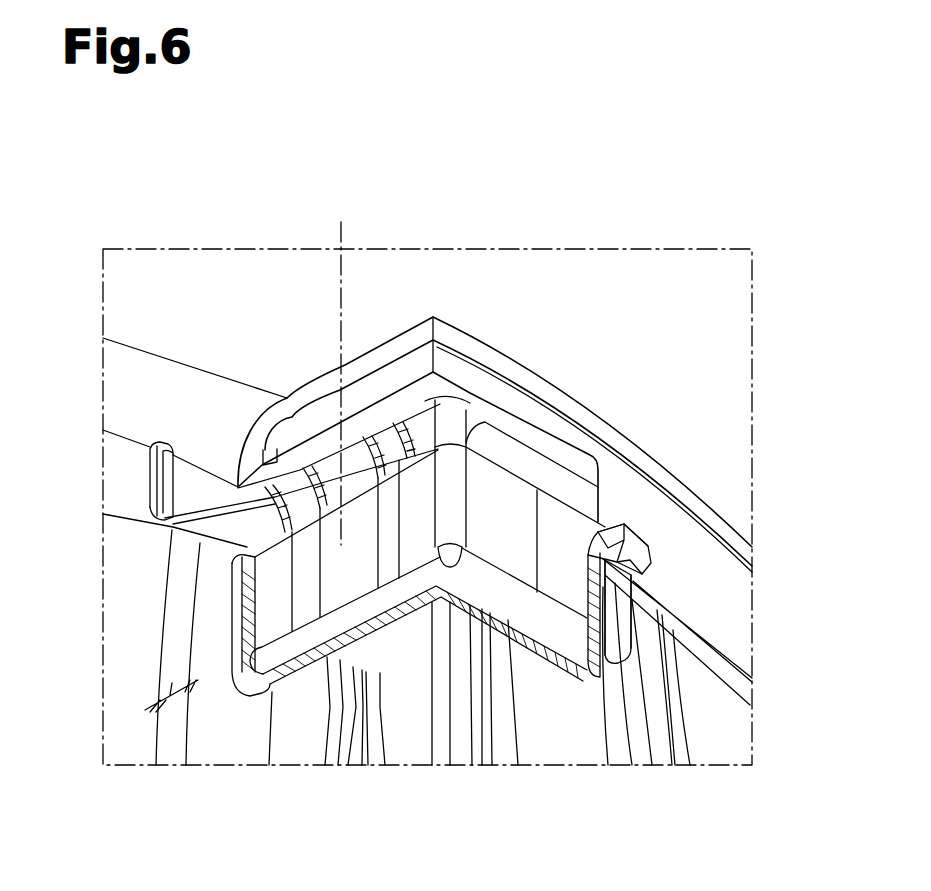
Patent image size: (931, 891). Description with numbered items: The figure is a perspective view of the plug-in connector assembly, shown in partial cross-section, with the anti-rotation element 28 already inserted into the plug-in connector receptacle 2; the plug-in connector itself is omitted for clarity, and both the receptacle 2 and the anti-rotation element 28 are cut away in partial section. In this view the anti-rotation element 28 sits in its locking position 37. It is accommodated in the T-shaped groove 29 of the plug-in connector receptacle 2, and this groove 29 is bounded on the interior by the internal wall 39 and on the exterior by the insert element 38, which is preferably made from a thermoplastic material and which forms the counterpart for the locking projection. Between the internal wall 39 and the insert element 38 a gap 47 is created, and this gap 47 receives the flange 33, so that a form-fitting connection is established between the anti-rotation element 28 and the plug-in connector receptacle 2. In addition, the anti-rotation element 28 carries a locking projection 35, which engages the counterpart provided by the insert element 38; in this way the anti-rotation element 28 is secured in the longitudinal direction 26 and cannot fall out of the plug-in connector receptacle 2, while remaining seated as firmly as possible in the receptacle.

The plug-in connector receptacle 2 is at (145, 378).
The longitudinal direction 26 is at (168, 694).
The anti-rotation element 28 is at (272, 627).
The T-shaped groove 29 is at (640, 610).
The flange 33 is at (627, 545).
The locking projection 35 is at (348, 455).
The locking position 37 is at (340, 284).
The insert element 38 is at (190, 487).
The internal wall 39 is at (615, 578).
The gap 47 is at (637, 531).